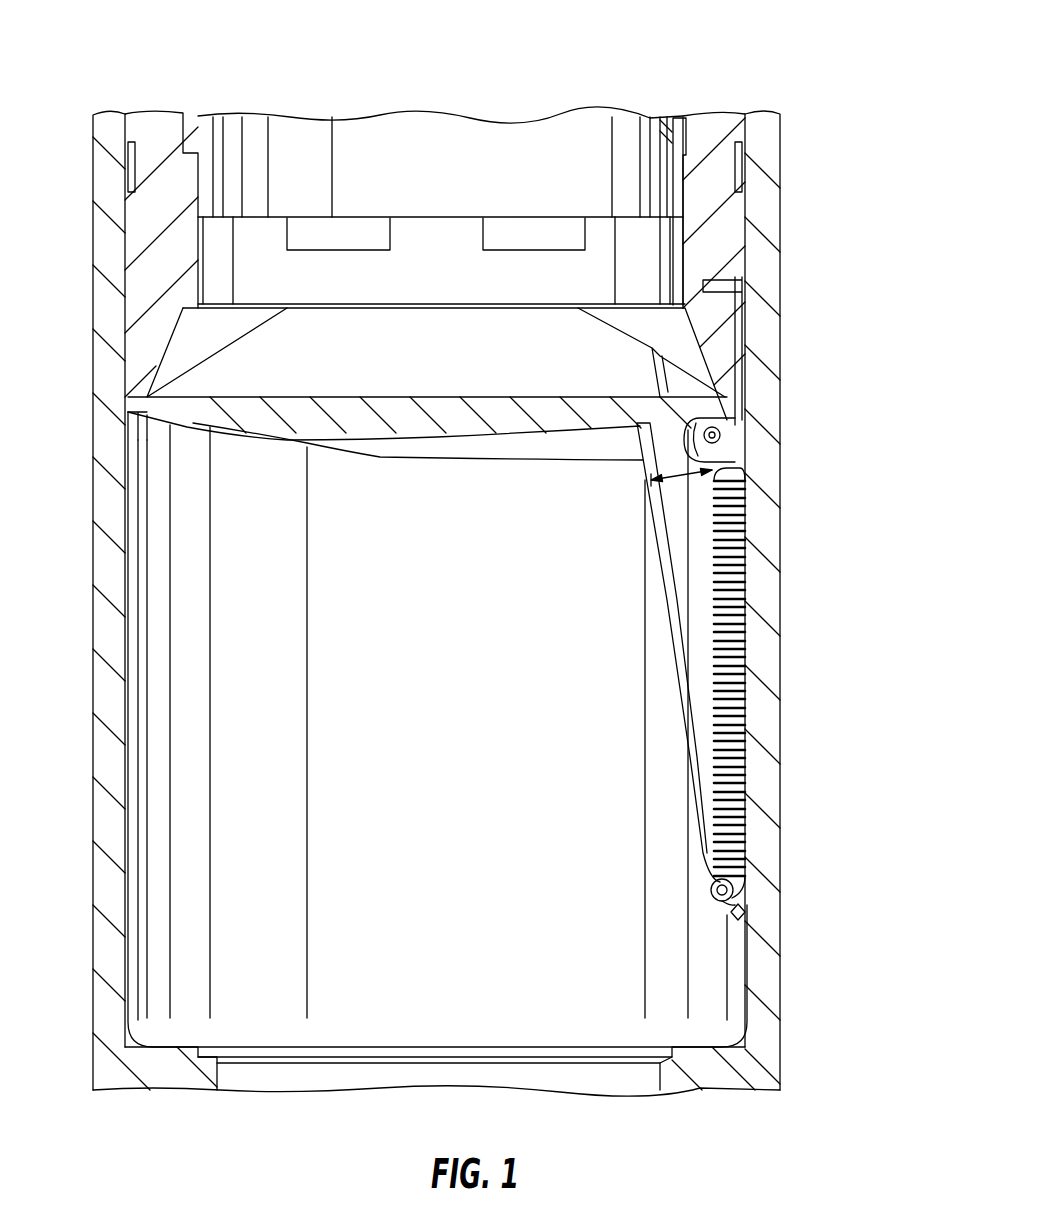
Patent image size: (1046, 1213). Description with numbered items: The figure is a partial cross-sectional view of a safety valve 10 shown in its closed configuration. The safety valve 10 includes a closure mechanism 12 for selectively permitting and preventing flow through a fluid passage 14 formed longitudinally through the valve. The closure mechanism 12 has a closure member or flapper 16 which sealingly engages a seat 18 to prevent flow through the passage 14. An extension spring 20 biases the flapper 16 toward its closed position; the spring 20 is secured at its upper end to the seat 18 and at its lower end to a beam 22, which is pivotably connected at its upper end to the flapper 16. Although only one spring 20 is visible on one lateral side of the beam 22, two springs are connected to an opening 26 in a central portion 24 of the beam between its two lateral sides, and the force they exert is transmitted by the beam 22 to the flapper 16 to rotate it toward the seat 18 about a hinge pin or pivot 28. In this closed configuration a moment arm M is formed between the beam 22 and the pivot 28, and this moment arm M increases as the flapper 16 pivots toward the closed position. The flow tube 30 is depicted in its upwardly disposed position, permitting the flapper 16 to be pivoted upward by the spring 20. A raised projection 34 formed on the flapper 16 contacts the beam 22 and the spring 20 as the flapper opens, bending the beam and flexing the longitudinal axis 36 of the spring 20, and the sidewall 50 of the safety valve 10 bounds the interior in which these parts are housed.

The safety valve 10 is at (835, 121).
The closure mechanism 12 is at (424, 565).
The fluid passage 14 is at (470, 158).
The flapper 16 is at (327, 452).
The seat 18 is at (187, 420).
The extension spring 20 is at (750, 652).
The beam 22 is at (665, 705).
The central portion 24 is at (730, 890).
The opening 26 is at (715, 900).
The hinge pin 28 is at (718, 430).
The flow tube 30 is at (700, 181).
The raised projection 34 is at (440, 440).
The longitudinal axis 36 is at (755, 720).
The sidewall 50 is at (782, 950).
The moment arm M is at (710, 473).